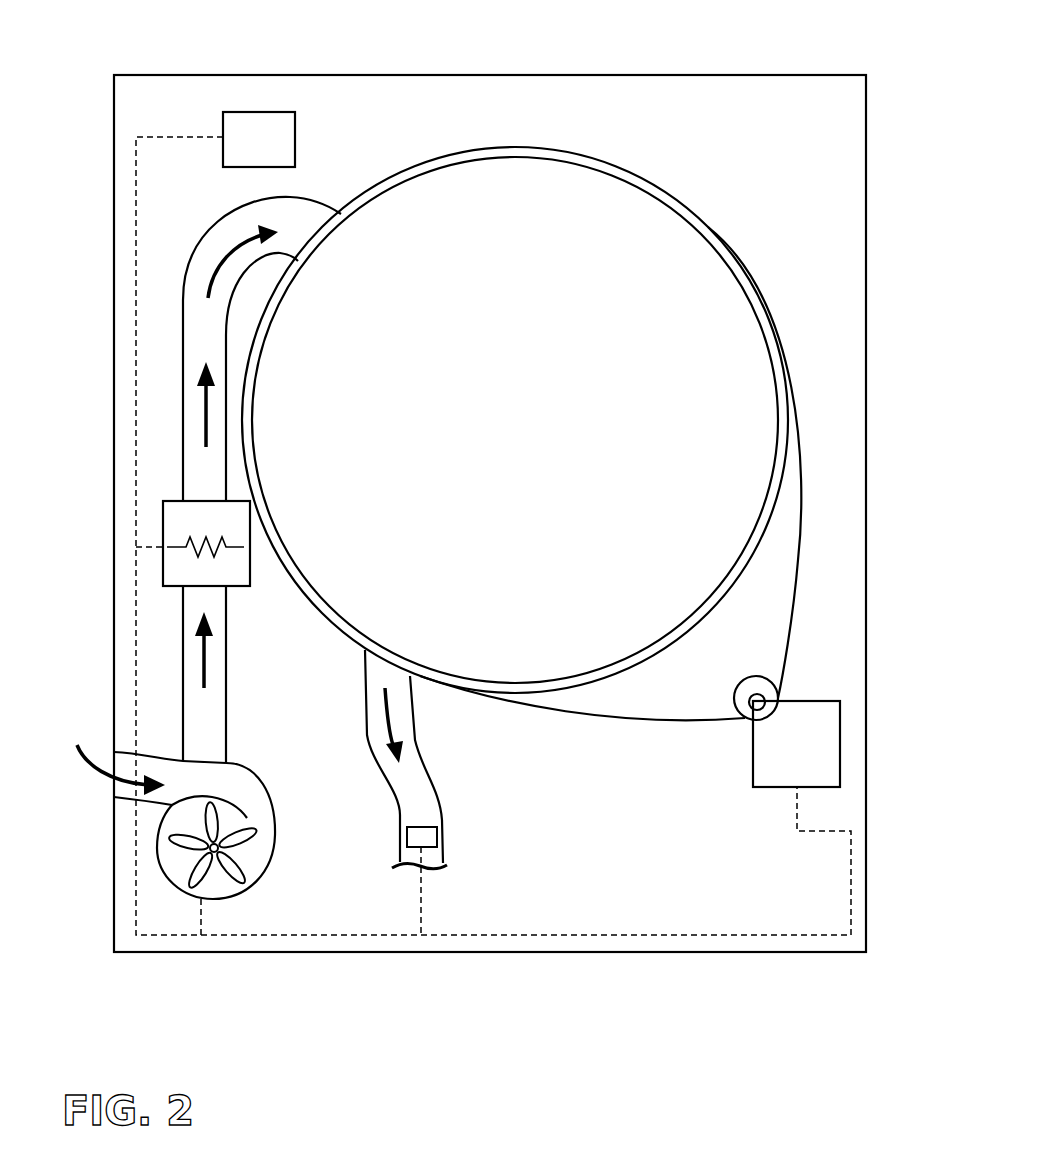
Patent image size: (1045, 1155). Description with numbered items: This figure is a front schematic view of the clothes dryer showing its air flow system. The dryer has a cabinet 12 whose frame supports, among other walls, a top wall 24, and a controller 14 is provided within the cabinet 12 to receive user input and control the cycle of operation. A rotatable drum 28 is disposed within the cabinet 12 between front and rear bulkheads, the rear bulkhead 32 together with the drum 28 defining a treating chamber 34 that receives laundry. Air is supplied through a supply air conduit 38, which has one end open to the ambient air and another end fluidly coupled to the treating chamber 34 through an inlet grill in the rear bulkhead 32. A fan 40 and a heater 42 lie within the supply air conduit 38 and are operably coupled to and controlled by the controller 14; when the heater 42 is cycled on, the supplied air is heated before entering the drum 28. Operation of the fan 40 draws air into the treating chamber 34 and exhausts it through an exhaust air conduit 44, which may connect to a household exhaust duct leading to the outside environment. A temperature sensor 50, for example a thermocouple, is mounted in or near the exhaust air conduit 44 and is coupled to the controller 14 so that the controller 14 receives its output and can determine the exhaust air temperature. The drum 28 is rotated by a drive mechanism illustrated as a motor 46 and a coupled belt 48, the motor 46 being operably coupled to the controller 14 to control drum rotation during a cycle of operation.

The cabinet 12 is at (464, 476).
The controller 14 is at (228, 112).
The top wall 24 is at (285, 75).
The rotatable drum 28 is at (437, 158).
The rear bulkhead 32 is at (753, 425).
The treating chamber 34 is at (587, 420).
The supply air conduit 38 is at (183, 340).
The fan 40 is at (150, 851).
The heater 42 is at (155, 521).
The exhaust air conduit 44 is at (365, 748).
The motor 46 is at (850, 723).
The belt 48 is at (800, 542).
The temperature sensor 50 is at (437, 836).